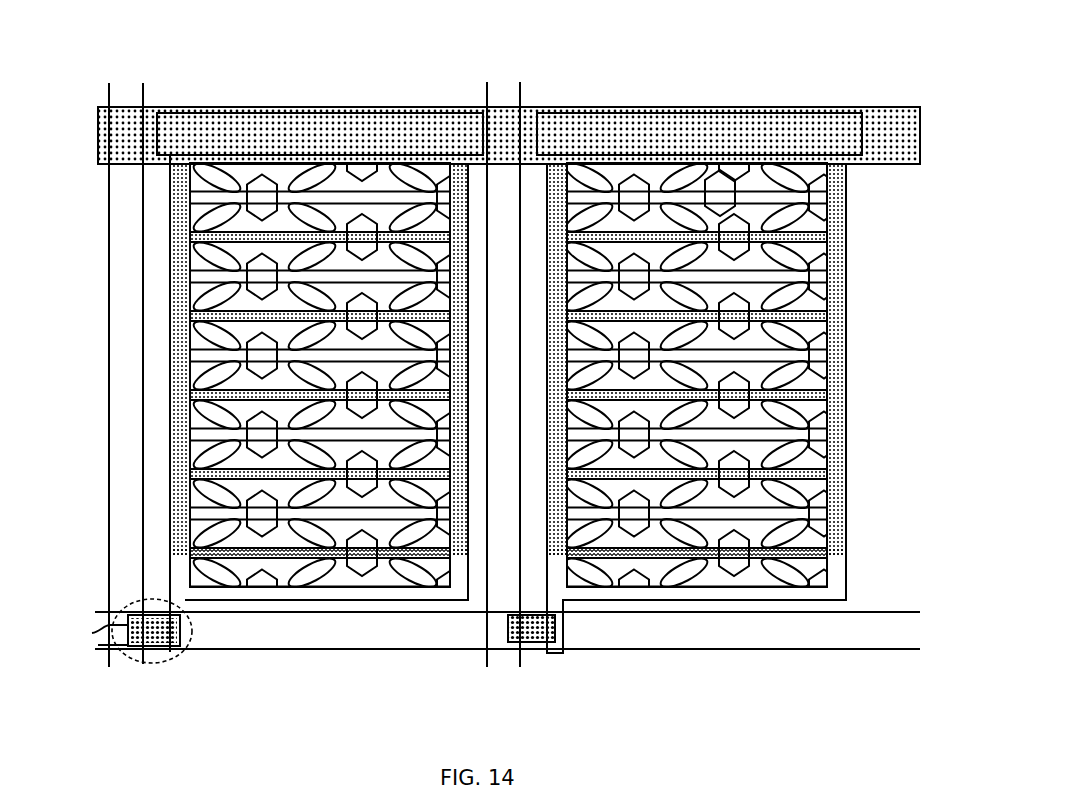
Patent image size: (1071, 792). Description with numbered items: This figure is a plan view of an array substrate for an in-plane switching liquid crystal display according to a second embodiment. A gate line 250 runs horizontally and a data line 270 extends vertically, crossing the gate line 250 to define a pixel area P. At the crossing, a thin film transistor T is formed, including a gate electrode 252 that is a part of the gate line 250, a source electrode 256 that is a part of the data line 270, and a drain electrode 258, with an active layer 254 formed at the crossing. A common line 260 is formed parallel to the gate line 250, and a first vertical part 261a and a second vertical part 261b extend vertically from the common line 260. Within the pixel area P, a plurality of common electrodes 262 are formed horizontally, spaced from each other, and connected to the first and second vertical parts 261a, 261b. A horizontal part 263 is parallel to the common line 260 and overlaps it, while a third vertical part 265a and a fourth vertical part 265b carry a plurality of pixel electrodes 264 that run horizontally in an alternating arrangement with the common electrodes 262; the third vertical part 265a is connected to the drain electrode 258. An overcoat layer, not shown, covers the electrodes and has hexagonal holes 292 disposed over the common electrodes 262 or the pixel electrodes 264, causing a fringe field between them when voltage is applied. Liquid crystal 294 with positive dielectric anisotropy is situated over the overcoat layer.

The common line 260 is at (593, 107).
The horizontal part 263 is at (700, 107).
The first vertical part 261a is at (686, 358).
The second vertical part 261b is at (847, 263).
The common electrodes 262 is at (847, 226).
The holes 292 is at (559, 383).
The liquid crystal 294 is at (804, 413).
The pixel area P is at (560, 379).
The fourth vertical part 265b is at (848, 548).
The pixel electrodes 264 is at (805, 600).
The third vertical part 265a is at (547, 563).
The data line 270 is at (133, 263).
The drain electrode 258 is at (172, 655).
The gate line 250 is at (270, 648).
The gate electrode 252 is at (152, 650).
The active layer 254 is at (92, 633).
The source electrode 256 is at (98, 645).
The thin film transistor T is at (139, 672).